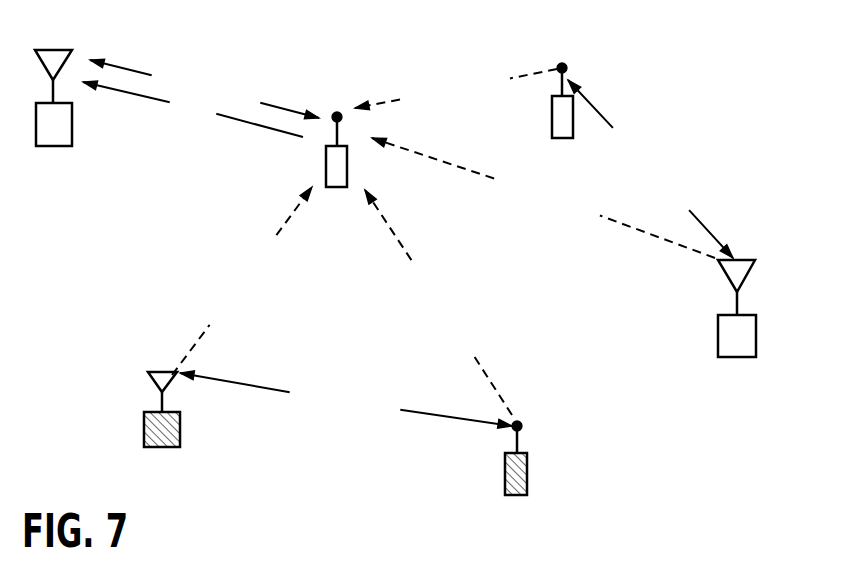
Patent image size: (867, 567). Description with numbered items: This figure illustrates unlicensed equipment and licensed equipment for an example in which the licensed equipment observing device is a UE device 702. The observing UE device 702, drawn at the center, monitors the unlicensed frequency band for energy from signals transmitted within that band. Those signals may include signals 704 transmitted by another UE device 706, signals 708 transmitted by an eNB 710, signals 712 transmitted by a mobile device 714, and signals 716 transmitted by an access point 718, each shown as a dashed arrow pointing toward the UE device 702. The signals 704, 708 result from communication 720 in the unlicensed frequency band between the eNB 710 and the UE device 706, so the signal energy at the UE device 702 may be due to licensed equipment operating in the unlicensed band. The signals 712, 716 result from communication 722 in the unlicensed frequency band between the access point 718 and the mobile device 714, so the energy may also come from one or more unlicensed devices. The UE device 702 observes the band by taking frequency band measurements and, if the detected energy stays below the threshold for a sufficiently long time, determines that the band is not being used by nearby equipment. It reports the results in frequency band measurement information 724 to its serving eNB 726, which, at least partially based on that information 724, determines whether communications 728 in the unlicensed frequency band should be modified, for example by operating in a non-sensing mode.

The UE device 702 is at (326, 153).
The signals 704 is at (528, 73).
The UE device 706 is at (552, 103).
The signals 708 is at (468, 170).
The eNB 710 is at (721, 357).
The signals 712 is at (482, 370).
The mobile device 714 is at (528, 477).
The signals 716 is at (282, 227).
The access point 718 is at (164, 447).
The communication 720 is at (612, 124).
The communication 722 is at (210, 378).
The frequency band measurement information 724 is at (232, 118).
The serving eNB 726 is at (36, 146).
The communications 728 is at (296, 112).